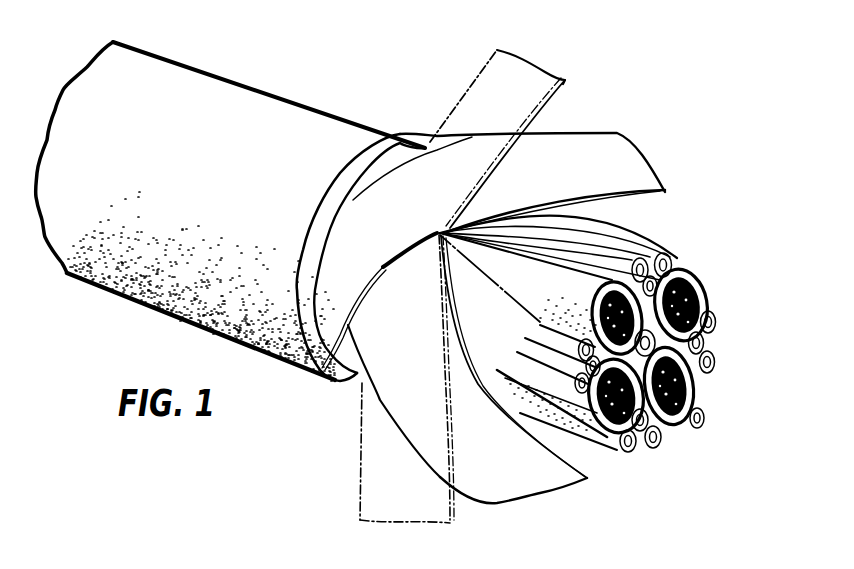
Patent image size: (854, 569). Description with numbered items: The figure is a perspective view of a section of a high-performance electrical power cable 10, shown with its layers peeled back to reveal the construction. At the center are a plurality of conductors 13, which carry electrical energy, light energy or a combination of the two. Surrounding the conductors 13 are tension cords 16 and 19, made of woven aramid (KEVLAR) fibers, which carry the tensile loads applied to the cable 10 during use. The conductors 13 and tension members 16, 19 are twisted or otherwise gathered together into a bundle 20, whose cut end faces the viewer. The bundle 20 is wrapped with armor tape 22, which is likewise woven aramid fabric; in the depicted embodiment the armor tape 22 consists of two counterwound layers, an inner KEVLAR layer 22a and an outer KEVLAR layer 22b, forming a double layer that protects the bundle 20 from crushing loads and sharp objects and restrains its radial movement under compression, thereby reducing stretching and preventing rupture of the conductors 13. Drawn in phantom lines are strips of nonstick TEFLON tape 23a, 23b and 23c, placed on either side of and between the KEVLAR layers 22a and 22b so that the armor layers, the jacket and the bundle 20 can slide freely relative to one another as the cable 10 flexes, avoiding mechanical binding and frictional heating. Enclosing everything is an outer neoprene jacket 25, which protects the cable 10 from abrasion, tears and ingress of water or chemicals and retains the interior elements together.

The high-performance electrical power cable 10 is at (432, 76).
The conductors 13 is at (690, 427).
The tension cords 16 is at (693, 382).
The tension cords 19 is at (673, 272).
The bundle 20 is at (696, 242).
The armor tape 22 is at (322, 250).
The inner layer of KEVLAR tape 22a is at (541, 480).
The outer layer of KEVLAR tape 22b is at (605, 136).
The nonstick tape 23a is at (449, 332).
The nonstick tape 23b is at (364, 463).
The nonstick tape 23c is at (533, 72).
The outer neoprene jacket 25 is at (241, 92).